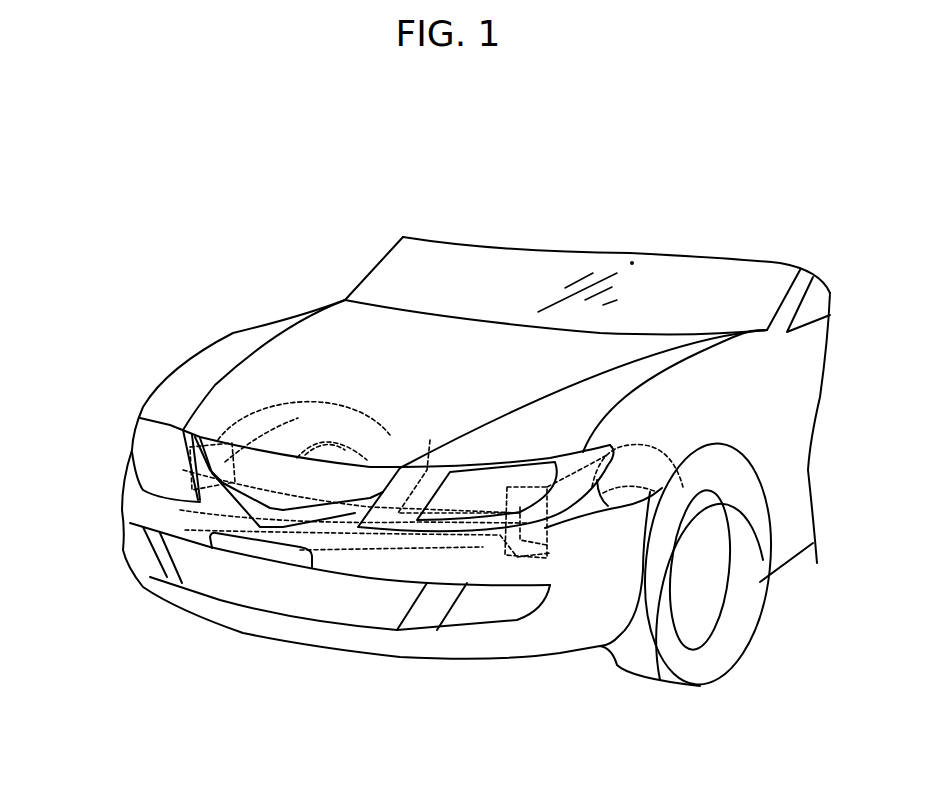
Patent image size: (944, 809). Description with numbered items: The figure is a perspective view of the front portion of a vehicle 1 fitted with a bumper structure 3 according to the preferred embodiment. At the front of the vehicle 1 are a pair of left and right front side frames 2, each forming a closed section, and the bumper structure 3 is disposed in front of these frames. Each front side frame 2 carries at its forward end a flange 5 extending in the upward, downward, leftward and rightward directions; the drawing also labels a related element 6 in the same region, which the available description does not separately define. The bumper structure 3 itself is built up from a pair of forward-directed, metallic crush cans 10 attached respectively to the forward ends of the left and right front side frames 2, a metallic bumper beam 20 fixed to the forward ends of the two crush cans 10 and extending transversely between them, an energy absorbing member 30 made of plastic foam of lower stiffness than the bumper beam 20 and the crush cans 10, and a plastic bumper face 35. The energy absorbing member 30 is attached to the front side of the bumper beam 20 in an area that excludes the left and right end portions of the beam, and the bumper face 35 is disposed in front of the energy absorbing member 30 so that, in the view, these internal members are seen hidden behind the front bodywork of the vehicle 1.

The vehicle 1 is at (192, 226).
The front side frame 2 is at (282, 413).
The bumper structure 3 is at (122, 482).
The flange 5 is at (223, 460).
The sensor 6 is at (528, 490).
The crush can 10 is at (183, 442).
The bumper beam 20 is at (430, 440).
The energy absorbing member 30 is at (333, 547).
The bumper face 35 is at (450, 568).